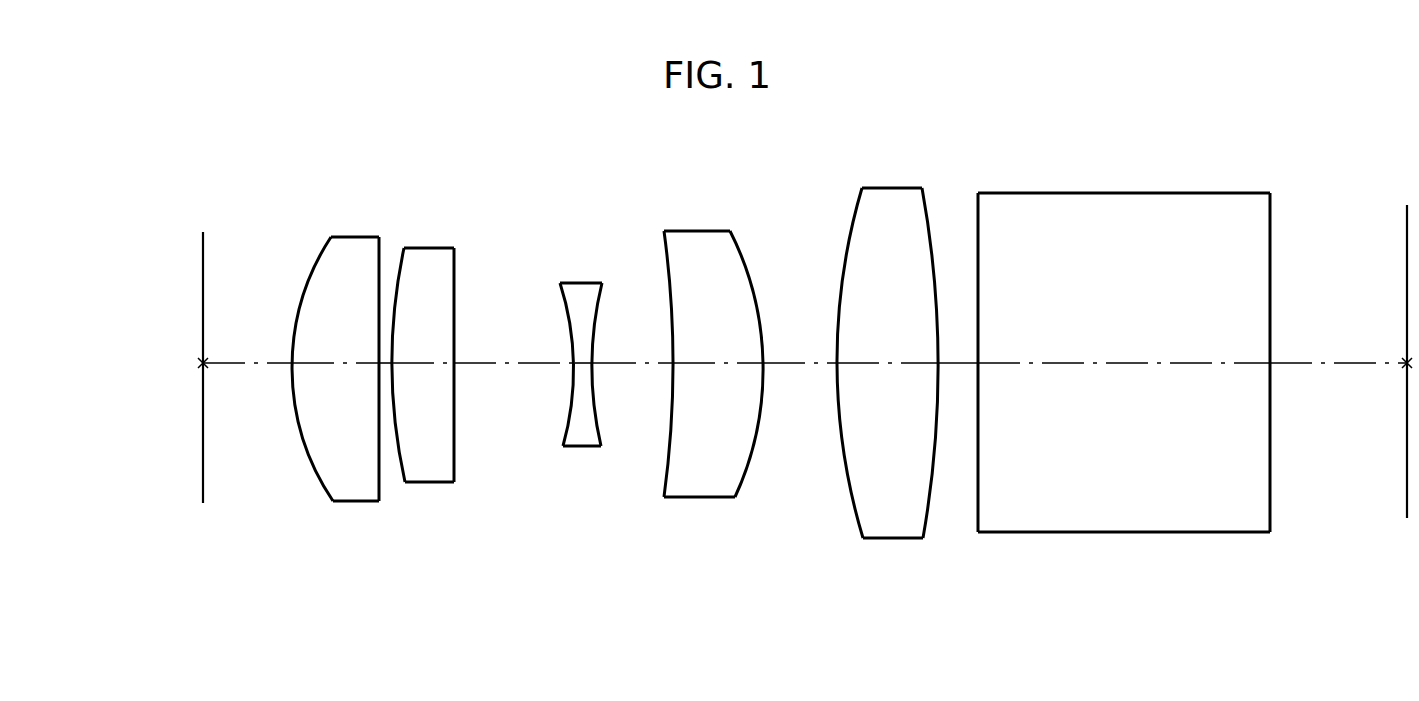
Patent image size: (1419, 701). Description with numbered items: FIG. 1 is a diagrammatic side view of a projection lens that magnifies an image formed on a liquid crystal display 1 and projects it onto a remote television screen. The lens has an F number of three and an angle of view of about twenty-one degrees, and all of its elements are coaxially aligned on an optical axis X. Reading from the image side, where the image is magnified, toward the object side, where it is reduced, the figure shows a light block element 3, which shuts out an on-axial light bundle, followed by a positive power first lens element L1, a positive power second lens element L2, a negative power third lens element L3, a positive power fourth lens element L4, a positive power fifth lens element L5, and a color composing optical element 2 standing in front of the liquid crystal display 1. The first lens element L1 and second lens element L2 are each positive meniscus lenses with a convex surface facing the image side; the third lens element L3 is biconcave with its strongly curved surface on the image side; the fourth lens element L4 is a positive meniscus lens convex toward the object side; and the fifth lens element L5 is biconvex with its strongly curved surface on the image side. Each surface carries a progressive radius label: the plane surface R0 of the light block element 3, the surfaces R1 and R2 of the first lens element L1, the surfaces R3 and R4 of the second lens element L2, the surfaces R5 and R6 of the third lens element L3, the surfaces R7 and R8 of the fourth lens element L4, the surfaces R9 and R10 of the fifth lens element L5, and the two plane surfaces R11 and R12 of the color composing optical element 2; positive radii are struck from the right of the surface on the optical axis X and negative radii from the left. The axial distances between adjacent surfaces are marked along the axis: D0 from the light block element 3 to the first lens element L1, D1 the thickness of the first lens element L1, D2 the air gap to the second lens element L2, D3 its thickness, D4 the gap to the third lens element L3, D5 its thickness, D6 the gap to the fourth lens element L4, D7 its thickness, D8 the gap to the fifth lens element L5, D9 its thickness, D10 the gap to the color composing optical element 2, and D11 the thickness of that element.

The liquid crystal display 1 is at (1406, 222).
The color composing optical element 2 is at (1154, 357).
The light block element 3 is at (241, 349).
The first lens element L1 is at (351, 359).
The second lens element L2 is at (457, 375).
The third lens element L3 is at (578, 356).
The fourth lens element L4 is at (697, 351).
The fifth lens element L5 is at (878, 356).
The optical axis X is at (1310, 362).
The axial distance D0 is at (242, 360).
The axial distance D1 is at (333, 362).
The axial distance D2 is at (378, 366).
The axial distance D3 is at (420, 362).
The axial distance D4 is at (486, 362).
The axial distance D5 is at (575, 362).
The axial distance D6 is at (632, 362).
The axial distance D7 is at (711, 362).
The axial distance D8 is at (802, 362).
The axial distance D9 is at (901, 362).
The axial distance D10 is at (950, 362).
The axial distance D11 is at (1066, 362).
The surface radius R0 is at (203, 487).
The surface radius R1 is at (315, 470).
The surface radius R2 is at (380, 472).
The surface radius R3 is at (395, 458).
The surface radius R4 is at (455, 458).
The surface radius R5 is at (563, 430).
The surface radius R6 is at (601, 425).
The surface radius R7 is at (665, 448).
The surface radius R8 is at (745, 470).
The surface radius R9 is at (845, 470).
The surface radius R10 is at (928, 507).
The surface radius R11 is at (978, 512).
The surface radius R12 is at (1271, 509).